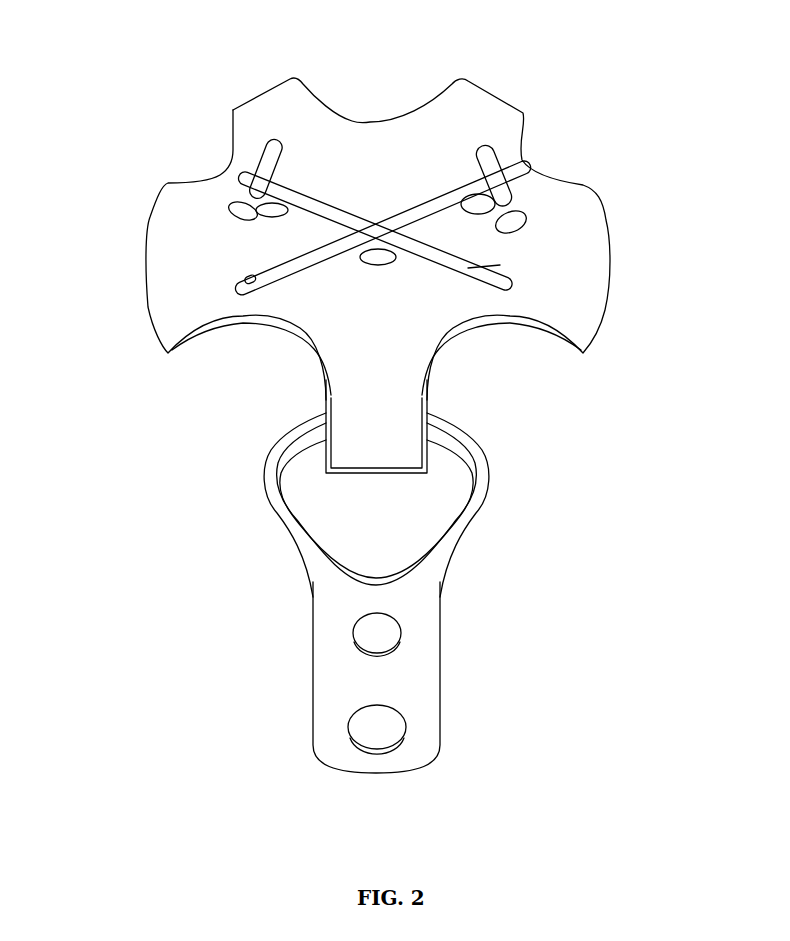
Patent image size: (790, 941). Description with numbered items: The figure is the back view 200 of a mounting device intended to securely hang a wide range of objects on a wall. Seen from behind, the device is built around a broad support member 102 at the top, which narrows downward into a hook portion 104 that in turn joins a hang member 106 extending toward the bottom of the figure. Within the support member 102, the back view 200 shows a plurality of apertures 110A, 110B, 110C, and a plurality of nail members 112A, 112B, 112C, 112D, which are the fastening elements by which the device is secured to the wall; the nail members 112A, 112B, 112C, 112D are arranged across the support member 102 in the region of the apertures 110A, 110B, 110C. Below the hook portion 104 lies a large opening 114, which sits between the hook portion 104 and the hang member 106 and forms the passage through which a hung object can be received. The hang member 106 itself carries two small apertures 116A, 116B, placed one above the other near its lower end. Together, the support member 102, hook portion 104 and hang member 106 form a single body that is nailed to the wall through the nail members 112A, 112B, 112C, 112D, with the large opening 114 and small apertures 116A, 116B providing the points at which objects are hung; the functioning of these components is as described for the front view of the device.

The back view 200 is at (213, 54).
The support member 102 is at (170, 247).
The hook portion 104 is at (348, 397).
The hang member 106 is at (313, 678).
The aperture 110A is at (505, 206).
The aperture 110B is at (232, 180).
The aperture 110C is at (380, 249).
The nail member 112A is at (524, 173).
The nail member 112B is at (500, 265).
The nail member 112C is at (241, 158).
The nail member 112D is at (232, 286).
The large opening 114 is at (433, 507).
The small aperture 116A is at (387, 633).
The small aperture 116B is at (387, 732).